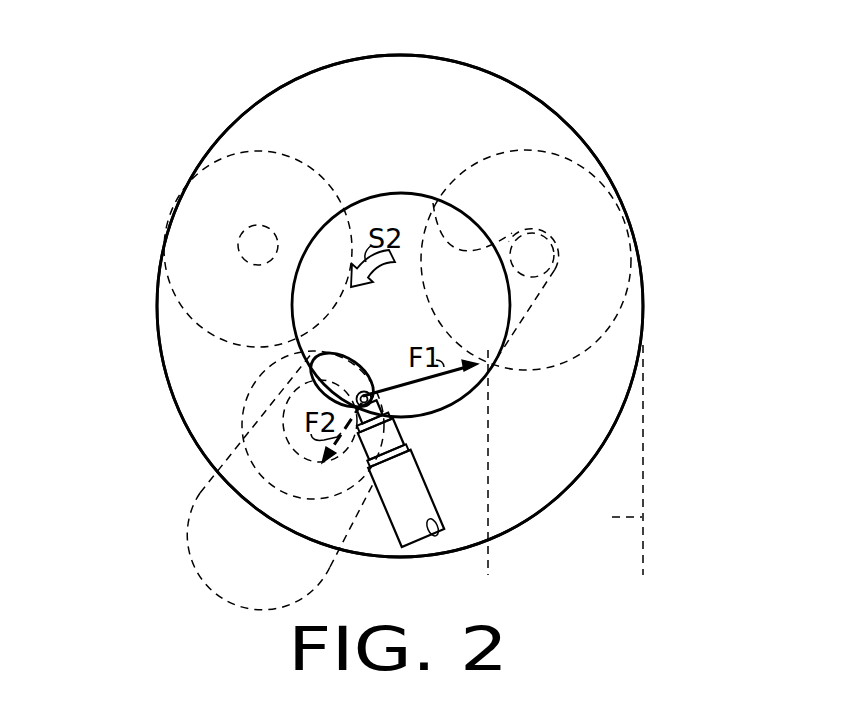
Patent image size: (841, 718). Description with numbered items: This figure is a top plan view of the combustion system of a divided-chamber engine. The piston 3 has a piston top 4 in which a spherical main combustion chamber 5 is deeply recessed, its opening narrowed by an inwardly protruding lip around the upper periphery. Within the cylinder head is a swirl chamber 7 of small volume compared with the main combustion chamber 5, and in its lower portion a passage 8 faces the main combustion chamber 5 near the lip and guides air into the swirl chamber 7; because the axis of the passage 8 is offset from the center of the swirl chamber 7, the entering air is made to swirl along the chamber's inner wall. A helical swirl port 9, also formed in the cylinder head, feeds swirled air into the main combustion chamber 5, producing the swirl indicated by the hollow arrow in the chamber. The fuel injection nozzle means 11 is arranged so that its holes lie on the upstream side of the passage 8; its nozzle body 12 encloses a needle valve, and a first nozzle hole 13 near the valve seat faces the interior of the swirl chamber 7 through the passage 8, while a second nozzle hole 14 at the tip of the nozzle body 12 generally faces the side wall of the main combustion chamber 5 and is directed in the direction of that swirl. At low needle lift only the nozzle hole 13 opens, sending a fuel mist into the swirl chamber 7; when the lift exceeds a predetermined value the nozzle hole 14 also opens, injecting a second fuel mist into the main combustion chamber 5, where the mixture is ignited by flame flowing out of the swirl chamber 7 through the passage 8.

The piston 3 is at (526, 93).
The piston top 4 is at (474, 96).
The main combustion chamber 5 is at (405, 318).
The swirl chamber 7 is at (215, 466).
The passage 8 is at (342, 380).
The helical swirl port 9 is at (640, 516).
The fuel injection nozzle means 11 is at (417, 528).
The nozzle body 12 is at (388, 442).
The nozzle hole 13 is at (362, 392).
The nozzle hole 14 is at (372, 392).